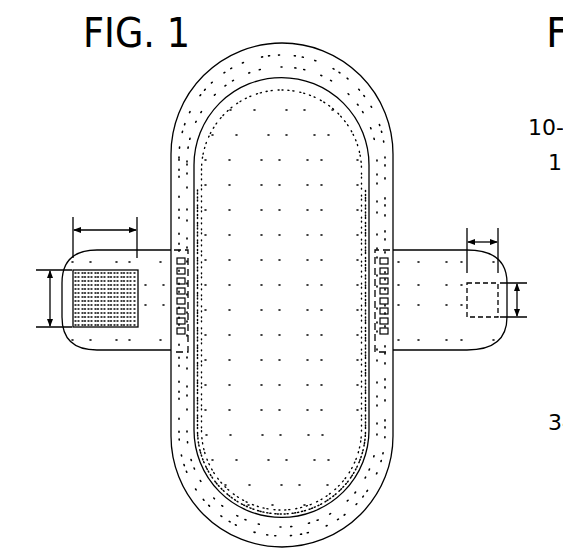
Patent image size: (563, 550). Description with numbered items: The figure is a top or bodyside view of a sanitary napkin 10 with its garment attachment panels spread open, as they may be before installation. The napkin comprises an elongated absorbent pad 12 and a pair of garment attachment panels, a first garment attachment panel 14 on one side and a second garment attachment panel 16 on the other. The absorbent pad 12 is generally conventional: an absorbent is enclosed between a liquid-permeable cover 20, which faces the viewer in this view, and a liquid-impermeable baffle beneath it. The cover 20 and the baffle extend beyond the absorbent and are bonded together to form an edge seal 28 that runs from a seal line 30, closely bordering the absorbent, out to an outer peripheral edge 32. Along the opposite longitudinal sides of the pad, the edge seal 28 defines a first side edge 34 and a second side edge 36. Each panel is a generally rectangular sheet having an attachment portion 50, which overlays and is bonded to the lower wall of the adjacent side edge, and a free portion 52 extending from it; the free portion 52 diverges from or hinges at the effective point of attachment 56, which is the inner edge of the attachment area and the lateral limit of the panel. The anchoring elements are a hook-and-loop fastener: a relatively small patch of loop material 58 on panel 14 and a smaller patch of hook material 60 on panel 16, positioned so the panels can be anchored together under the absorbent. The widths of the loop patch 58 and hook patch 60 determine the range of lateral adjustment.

The sanitary napkin 10 is at (155, 153).
The absorbent pad 12 is at (160, 188).
The first garment attachment panel 14 is at (65, 250).
The second garment attachment panel 16 is at (420, 240).
The liquid-permeable cover 20 is at (292, 163).
The edge seal 28 is at (327, 67).
The seal line 30 is at (200, 138).
The outer peripheral edge 32 is at (388, 118).
The first side edge 34 is at (152, 422).
The second side edge 36 is at (402, 418).
The attachment portion 50 is at (190, 360).
The free portion 52 is at (143, 350).
The effective point of attachment 56 is at (192, 300).
The loop material patch 58 is at (100, 327).
The hook material patch 60 is at (487, 318).